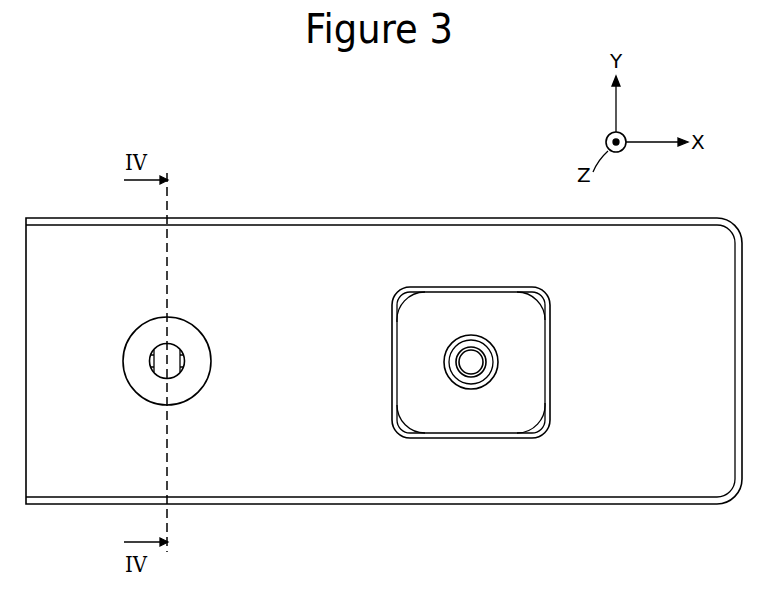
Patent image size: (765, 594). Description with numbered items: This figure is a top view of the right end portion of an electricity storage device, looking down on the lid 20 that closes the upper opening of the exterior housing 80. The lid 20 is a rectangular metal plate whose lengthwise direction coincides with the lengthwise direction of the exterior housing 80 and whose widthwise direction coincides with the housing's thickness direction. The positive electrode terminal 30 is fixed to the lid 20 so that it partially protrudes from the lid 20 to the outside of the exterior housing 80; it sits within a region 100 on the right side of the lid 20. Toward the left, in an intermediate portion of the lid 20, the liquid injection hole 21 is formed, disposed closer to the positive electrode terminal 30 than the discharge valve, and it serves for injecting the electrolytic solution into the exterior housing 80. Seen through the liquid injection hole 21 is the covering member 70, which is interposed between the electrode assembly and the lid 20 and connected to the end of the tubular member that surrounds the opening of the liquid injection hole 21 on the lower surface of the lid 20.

The lid 20 is at (386, 475).
The exterior housing 80 is at (360, 218).
The covering member 70 is at (162, 368).
The liquid injection hole 21 is at (172, 348).
The recess 100 is at (551, 387).
The positive electrode terminal 30 is at (498, 350).